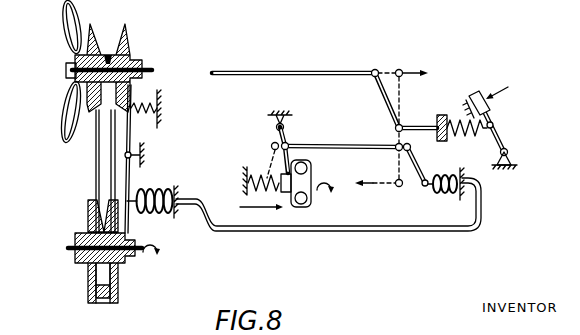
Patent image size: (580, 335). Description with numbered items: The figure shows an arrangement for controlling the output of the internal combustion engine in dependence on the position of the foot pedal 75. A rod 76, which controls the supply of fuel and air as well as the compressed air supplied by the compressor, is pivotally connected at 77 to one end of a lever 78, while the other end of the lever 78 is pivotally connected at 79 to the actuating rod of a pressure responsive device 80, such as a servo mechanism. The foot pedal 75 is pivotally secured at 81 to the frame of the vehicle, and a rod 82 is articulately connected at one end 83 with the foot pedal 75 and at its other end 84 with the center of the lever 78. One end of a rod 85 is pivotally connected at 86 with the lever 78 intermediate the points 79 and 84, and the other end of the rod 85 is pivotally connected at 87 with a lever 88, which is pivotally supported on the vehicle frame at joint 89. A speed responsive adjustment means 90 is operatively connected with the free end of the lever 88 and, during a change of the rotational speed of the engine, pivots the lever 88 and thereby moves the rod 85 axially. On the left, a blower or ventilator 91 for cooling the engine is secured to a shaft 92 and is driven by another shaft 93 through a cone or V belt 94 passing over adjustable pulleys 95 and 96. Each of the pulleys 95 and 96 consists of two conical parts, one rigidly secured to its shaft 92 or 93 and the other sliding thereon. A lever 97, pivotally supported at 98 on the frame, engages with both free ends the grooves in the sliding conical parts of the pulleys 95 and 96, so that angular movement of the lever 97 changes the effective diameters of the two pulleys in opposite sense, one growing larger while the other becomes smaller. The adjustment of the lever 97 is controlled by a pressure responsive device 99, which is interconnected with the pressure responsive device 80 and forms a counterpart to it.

The foot pedal 75 is at (491, 104).
The rod 76 is at (235, 71).
The pivot connection 77 is at (376, 68).
The lever 78 is at (383, 96).
The pivot point 79 is at (421, 187).
The pressure responsive device 80 is at (438, 194).
The pivot 81 is at (512, 156).
The rod 82 is at (411, 126).
The rod end 83 is at (505, 128).
The rod end 84 is at (396, 128).
The rod 85 is at (390, 149).
The pivot connection 86 is at (421, 151).
The pivot connection 87 is at (287, 142).
The lever 88 is at (272, 148).
The joint 89 is at (275, 125).
The speed responsive adjustment means 90 is at (311, 194).
The blower 91 is at (70, 92).
The shaft 92 is at (153, 68).
The shaft 93 is at (72, 248).
The V belt 94 is at (96, 165).
The adjustable pulley 95 is at (128, 40).
The adjustable pulley 96 is at (110, 278).
The lever 97 is at (132, 133).
The pivot 98 is at (133, 157).
The pressure responsive device 99 is at (158, 214).